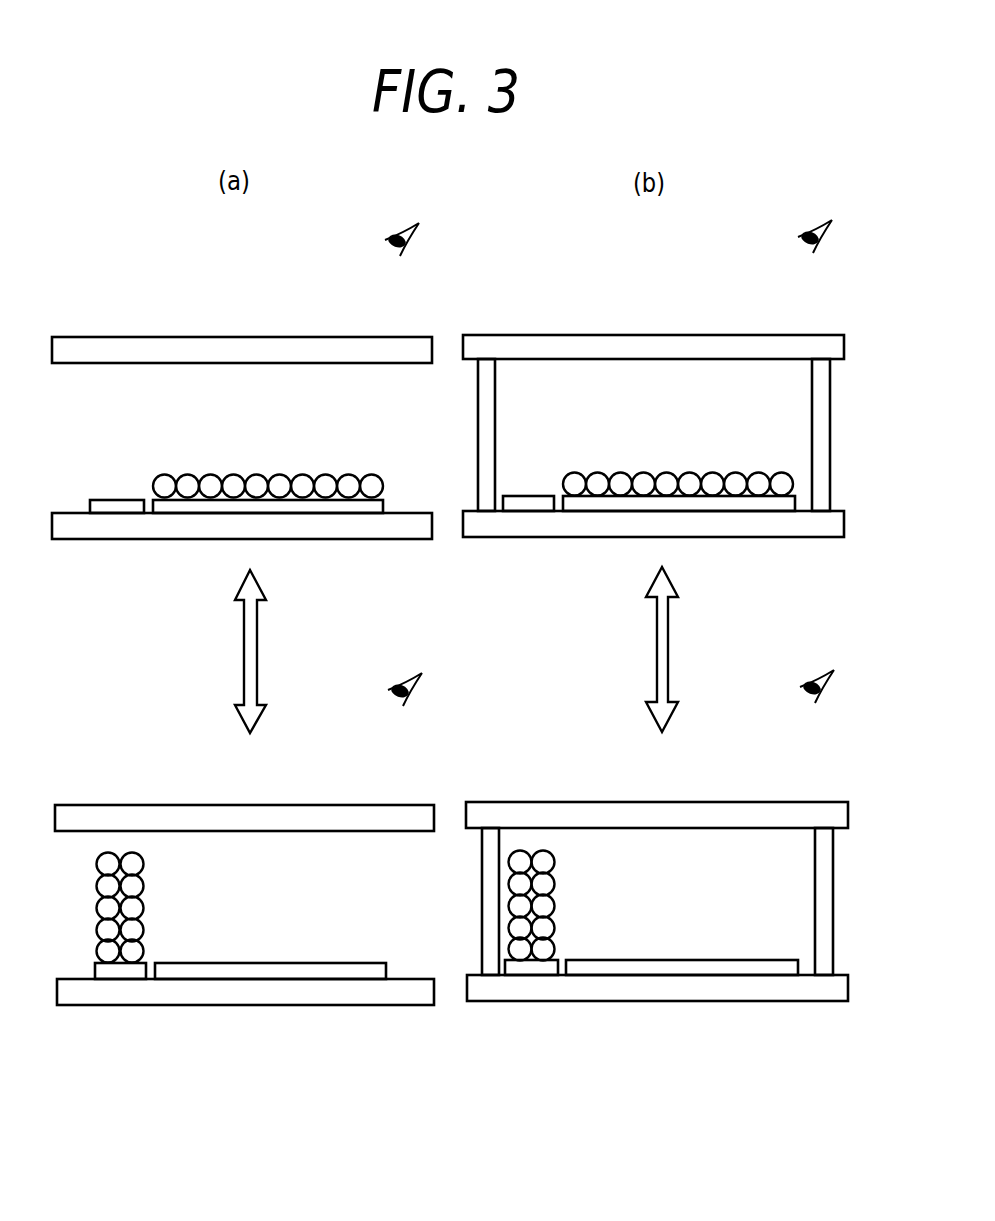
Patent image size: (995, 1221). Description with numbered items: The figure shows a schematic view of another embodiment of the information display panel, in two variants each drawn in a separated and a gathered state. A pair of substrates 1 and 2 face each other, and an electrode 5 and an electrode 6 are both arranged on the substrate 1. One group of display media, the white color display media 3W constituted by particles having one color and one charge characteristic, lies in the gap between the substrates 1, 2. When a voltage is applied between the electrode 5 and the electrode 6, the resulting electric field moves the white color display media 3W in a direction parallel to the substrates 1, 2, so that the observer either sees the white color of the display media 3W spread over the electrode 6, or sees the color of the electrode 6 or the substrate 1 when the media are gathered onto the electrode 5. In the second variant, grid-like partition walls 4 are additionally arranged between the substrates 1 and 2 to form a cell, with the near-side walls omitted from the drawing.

The substrate 1 is at (197, 530).
The substrate 2 is at (266, 349).
The white color display media 3W is at (371, 482).
The partition walls 4 is at (490, 430).
The electrode 5 is at (112, 510).
The electrode 6 is at (348, 508).